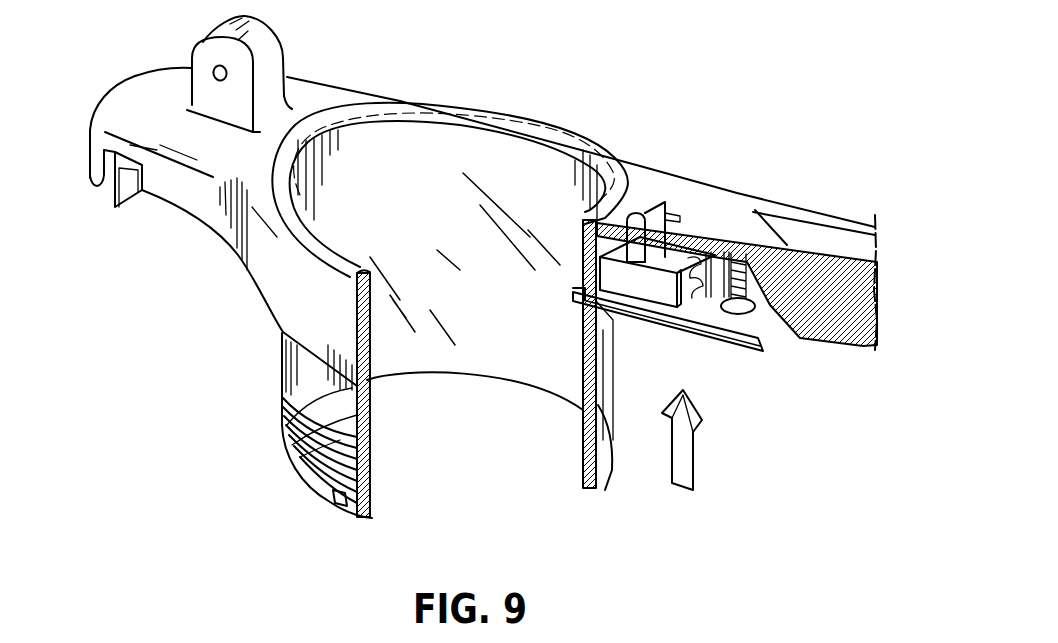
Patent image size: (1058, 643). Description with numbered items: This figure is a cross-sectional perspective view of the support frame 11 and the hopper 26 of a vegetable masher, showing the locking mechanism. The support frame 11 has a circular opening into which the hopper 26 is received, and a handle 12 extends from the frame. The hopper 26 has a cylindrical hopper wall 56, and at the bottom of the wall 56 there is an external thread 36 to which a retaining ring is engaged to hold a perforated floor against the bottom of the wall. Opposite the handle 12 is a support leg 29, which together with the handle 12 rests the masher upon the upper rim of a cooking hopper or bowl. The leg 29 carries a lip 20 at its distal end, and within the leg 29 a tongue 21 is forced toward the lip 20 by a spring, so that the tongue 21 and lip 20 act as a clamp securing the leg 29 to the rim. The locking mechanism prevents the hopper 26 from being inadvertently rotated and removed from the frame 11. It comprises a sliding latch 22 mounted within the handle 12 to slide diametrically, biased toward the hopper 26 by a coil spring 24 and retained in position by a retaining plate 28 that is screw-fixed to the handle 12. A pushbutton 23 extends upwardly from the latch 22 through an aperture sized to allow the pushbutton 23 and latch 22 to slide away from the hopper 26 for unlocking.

The support frame 11 is at (265, 285).
The handle 12 is at (740, 205).
The lip 20 is at (90, 177).
The tongue 21 is at (127, 195).
The sliding latch 22 is at (660, 293).
The pushbutton 23 is at (655, 200).
The coil spring 24 is at (700, 300).
The hopper 26 is at (252, 442).
The retaining plate 28 is at (747, 328).
The support leg 29 is at (133, 95).
The external thread 36 is at (347, 503).
The cylindrical hopper wall 56 is at (293, 375).